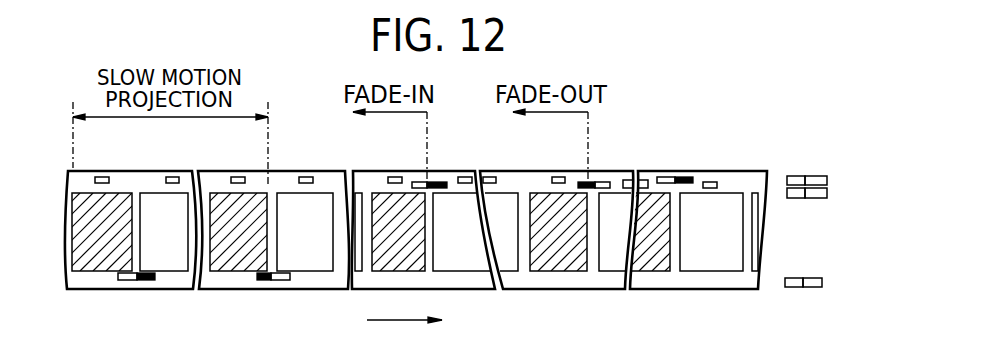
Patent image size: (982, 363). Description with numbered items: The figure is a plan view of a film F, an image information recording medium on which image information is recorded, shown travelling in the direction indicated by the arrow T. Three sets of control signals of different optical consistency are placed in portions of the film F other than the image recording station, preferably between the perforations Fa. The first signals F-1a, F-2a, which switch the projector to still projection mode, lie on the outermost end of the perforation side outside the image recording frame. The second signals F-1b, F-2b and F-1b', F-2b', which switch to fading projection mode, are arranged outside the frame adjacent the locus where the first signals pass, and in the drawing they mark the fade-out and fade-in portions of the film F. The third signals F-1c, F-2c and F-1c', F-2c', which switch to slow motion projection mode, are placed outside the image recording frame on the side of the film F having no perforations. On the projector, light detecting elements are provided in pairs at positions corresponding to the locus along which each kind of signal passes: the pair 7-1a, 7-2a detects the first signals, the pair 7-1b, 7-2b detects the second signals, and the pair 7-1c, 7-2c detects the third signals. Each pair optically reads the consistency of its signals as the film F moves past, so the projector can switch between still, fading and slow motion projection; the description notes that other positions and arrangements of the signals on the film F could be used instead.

The film F is at (532, 289).
The arrow indicating film travel direction T is at (404, 332).
The perforations Fa is at (488, 177).
The third signal F-2c' is at (102, 305).
The third signal F-1c' is at (162, 305).
The third signal F-2c is at (236, 305).
The third signal F-1c is at (294, 305).
The second signal F-2b' is at (391, 155).
The second signal F-1b' is at (457, 155).
The second signal F-2b is at (561, 156).
The second signal F-1b is at (620, 156).
The first signal F-2a is at (667, 176).
The first signal F-1a is at (685, 176).
The light detecting element 7-2a is at (793, 175).
The light detecting element 7-1a is at (817, 175).
The light detecting element 7-2b is at (790, 199).
The light detecting element 7-1b is at (815, 199).
The light detecting element 7-2c is at (790, 288).
The light detecting element 7-1c is at (813, 288).